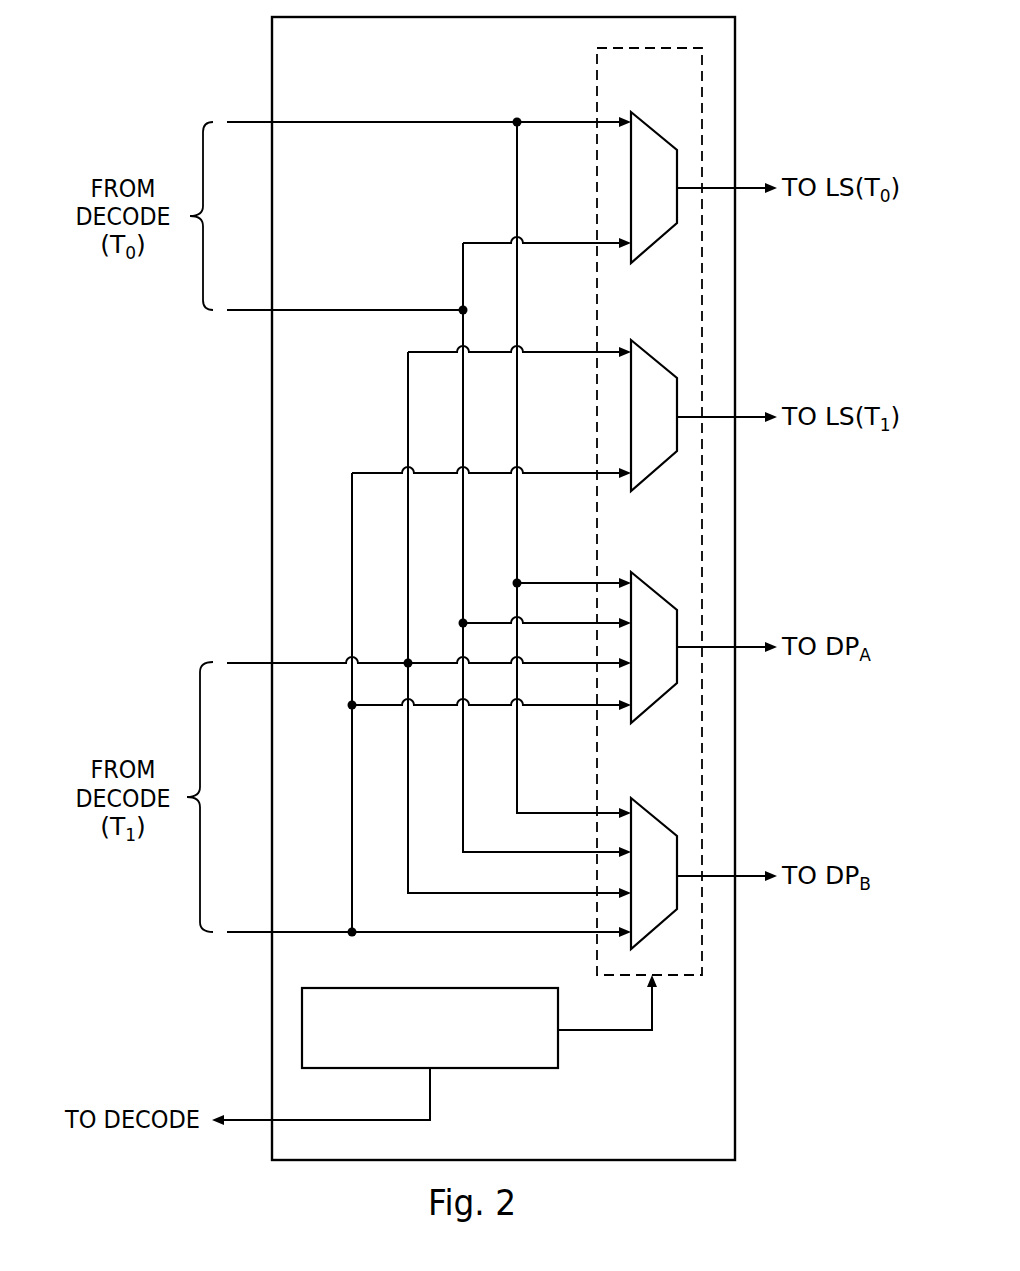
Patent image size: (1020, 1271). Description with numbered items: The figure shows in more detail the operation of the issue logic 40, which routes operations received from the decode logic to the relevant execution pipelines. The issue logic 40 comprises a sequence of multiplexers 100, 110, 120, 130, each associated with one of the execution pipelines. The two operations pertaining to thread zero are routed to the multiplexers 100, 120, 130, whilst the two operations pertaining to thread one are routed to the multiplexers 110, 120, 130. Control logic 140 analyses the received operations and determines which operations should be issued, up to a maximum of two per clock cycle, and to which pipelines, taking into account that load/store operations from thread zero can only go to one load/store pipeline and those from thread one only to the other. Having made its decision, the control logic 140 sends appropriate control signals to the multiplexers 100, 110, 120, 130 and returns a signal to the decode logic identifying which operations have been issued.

The issue logic 40 is at (735, 75).
The multiplexer 100 is at (631, 112).
The multiplexer 110 is at (631, 340).
The multiplexer 120 is at (631, 572).
The multiplexer 130 is at (631, 798).
The control logic 140 is at (558, 1050).